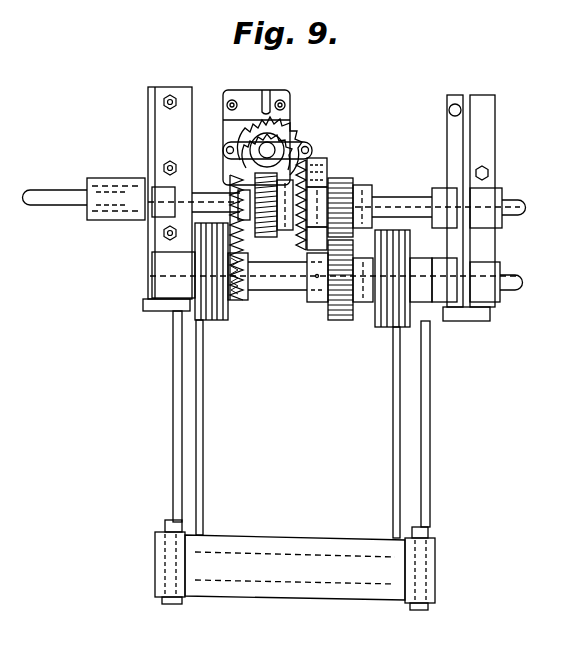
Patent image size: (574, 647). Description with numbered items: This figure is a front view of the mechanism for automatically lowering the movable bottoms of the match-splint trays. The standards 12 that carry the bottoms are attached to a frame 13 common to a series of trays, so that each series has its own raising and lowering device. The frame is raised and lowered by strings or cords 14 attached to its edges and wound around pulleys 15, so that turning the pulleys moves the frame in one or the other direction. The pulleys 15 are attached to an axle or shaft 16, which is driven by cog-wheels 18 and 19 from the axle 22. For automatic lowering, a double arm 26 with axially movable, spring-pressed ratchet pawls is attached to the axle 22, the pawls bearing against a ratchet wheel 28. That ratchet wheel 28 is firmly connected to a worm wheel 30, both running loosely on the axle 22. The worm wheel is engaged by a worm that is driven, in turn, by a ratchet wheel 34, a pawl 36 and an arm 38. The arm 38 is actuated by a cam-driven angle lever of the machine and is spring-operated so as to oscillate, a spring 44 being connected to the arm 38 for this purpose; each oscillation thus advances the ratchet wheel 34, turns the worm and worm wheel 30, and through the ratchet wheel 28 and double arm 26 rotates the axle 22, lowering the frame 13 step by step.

The standards 12 is at (173, 409).
The frame 13 is at (287, 540).
The strings or cords 14 is at (203, 440).
The pulleys 15 is at (212, 312).
The axle or shaft 16 is at (242, 276).
The cog-wheel 18 is at (342, 320).
The cog-wheel 19 is at (360, 186).
The axle 22 is at (407, 206).
The double arm 26 is at (300, 220).
The ratchet wheel 28 is at (305, 260).
The worm wheel 30 is at (257, 190).
The ratchet wheel 34 is at (262, 135).
The pawl 36 is at (298, 130).
The arm 38 is at (290, 140).
The spring 44 is at (238, 308).